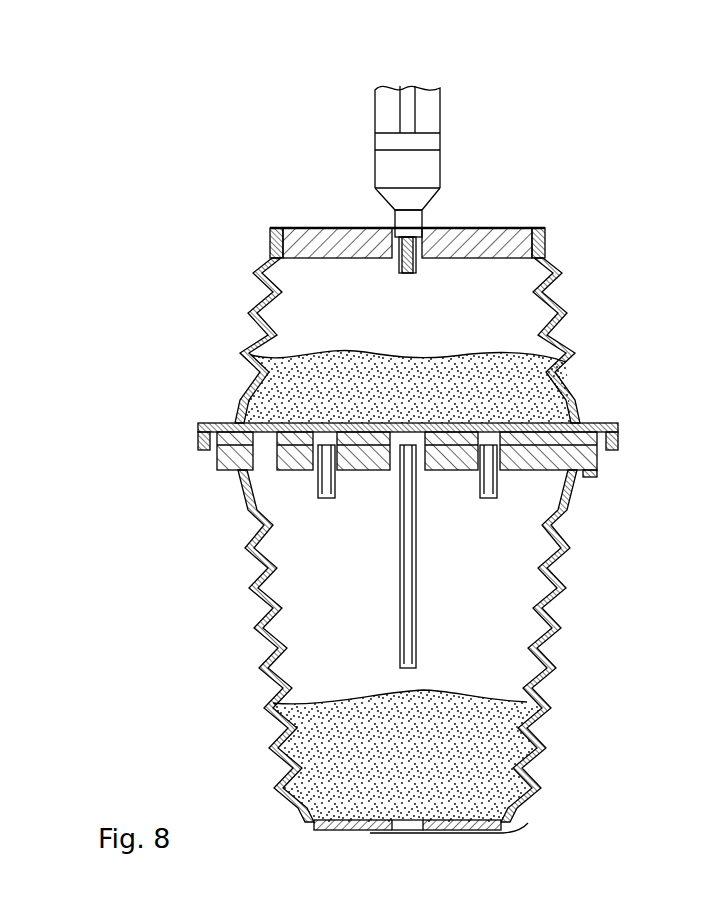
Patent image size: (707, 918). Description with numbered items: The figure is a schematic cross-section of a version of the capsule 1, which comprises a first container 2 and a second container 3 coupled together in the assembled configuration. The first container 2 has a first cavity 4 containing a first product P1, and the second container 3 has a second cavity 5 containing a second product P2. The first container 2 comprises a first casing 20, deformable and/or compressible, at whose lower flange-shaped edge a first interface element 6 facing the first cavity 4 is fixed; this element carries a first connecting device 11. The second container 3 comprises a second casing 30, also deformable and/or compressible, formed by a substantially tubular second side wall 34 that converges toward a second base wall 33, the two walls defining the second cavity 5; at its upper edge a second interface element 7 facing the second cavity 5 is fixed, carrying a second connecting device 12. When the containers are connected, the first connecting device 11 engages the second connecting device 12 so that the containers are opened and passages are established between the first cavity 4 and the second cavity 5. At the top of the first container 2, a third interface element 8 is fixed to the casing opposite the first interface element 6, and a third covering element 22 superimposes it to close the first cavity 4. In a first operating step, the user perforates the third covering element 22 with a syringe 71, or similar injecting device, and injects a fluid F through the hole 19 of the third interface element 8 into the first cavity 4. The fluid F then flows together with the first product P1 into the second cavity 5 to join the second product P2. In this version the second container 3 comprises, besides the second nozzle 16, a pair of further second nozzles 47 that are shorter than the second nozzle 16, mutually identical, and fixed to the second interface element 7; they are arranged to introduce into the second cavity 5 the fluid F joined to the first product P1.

The capsule 1 is at (618, 172).
The first container 2 is at (222, 287).
The second container 3 is at (399, 646).
The first cavity 4 is at (340, 318).
The second cavity 5 is at (357, 596).
The first interface element 6 is at (517, 430).
The second interface element 7 is at (293, 470).
The third interface element 8 is at (318, 228).
The first connecting device 11 is at (270, 432).
The second connecting device 12 is at (500, 468).
The second nozzle 16 is at (413, 598).
The hole 19 is at (412, 238).
The first casing 20 is at (590, 342).
The third covering element 22 is at (288, 228).
The second casing 30 is at (258, 727).
The second base wall 33 is at (457, 822).
The second side wall 34 is at (527, 722).
The further second nozzles 47 is at (320, 498).
The syringe 71 is at (385, 143).
The fluid F is at (392, 302).
The first product P1 is at (262, 345).
The second product P2 is at (443, 718).